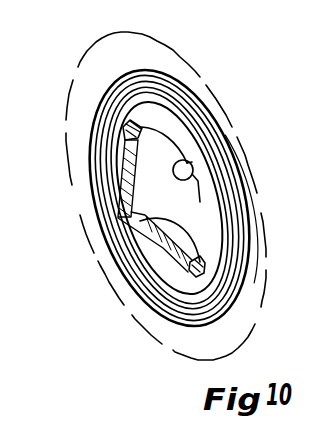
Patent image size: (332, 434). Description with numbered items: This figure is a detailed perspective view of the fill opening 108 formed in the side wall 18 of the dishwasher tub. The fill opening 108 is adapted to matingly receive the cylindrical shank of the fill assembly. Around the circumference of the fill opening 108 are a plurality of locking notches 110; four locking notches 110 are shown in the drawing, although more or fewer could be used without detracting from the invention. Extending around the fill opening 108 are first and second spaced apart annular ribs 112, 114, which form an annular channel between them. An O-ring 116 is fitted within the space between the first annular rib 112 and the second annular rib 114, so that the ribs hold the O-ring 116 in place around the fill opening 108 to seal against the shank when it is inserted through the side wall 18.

The side wall 18 is at (79, 68).
The first annular rib 112 is at (103, 81).
The O-ring 116 is at (100, 99).
The second annular rib 114 is at (100, 115).
The locking notches 110 is at (139, 147).
The fill opening 108 is at (147, 203).